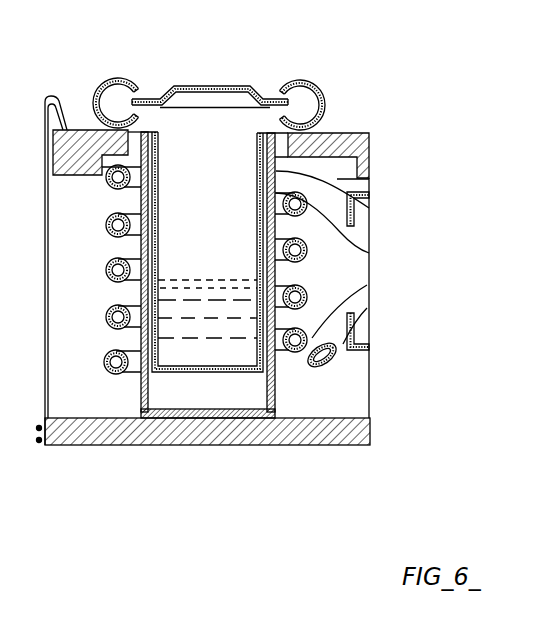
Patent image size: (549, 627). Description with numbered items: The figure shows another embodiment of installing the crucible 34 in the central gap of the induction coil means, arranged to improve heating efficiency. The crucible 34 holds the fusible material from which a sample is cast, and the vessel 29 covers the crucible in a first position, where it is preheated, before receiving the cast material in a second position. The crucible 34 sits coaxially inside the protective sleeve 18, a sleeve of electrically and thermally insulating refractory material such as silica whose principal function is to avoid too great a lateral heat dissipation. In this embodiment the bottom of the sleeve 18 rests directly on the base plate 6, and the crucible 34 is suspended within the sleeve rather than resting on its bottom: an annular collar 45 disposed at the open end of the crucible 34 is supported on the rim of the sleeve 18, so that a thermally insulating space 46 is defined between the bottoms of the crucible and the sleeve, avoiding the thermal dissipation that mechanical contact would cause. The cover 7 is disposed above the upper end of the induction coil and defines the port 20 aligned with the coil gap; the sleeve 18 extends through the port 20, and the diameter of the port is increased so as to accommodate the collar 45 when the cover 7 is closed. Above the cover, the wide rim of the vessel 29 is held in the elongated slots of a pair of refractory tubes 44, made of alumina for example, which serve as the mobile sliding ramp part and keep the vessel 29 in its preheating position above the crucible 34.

The base plate 6 is at (352, 433).
The cover 7 is at (356, 134).
The protective sleeve 18 is at (140, 247).
The port 20 is at (130, 147).
The vessel 29 is at (231, 86).
The crucible 34 is at (197, 194).
The tubes 44 is at (320, 84).
The annular collar 45 is at (267, 128).
The thermally insulating space 46 is at (238, 400).